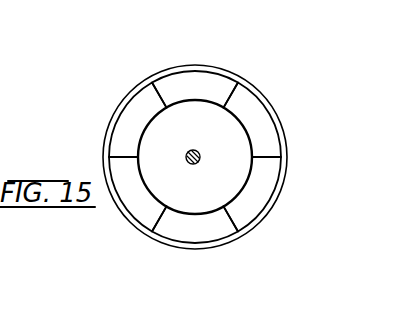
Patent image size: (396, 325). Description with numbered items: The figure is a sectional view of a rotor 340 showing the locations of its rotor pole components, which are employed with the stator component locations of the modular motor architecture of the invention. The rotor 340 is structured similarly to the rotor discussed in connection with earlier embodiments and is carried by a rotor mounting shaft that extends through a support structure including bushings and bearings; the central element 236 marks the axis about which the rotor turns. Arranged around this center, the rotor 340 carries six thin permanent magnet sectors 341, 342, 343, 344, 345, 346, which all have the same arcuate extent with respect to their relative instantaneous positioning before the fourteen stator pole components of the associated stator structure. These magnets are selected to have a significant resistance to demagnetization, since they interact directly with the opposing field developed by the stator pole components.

The rotor 340 is at (263, 74).
The permanent magnet sector 341 is at (190, 82).
The permanent magnet sector 342 is at (262, 125).
The permanent magnet sector 343 is at (262, 183).
The permanent magnet sector 344 is at (205, 227).
The permanent magnet sector 345 is at (147, 208).
The permanent magnet sector 346 is at (131, 120).
The center pivot 236 is at (205, 118).